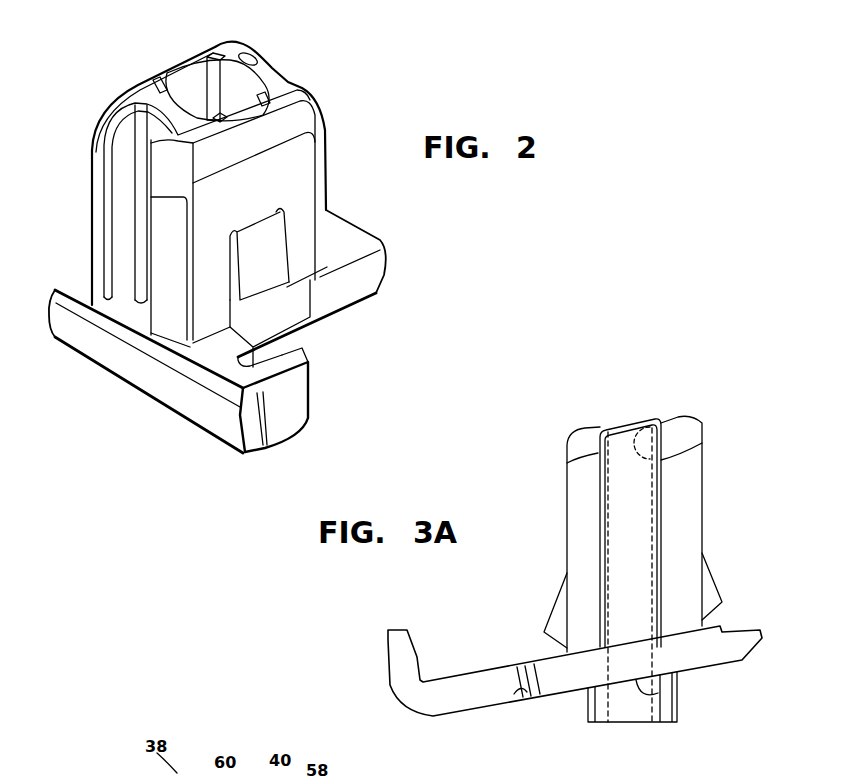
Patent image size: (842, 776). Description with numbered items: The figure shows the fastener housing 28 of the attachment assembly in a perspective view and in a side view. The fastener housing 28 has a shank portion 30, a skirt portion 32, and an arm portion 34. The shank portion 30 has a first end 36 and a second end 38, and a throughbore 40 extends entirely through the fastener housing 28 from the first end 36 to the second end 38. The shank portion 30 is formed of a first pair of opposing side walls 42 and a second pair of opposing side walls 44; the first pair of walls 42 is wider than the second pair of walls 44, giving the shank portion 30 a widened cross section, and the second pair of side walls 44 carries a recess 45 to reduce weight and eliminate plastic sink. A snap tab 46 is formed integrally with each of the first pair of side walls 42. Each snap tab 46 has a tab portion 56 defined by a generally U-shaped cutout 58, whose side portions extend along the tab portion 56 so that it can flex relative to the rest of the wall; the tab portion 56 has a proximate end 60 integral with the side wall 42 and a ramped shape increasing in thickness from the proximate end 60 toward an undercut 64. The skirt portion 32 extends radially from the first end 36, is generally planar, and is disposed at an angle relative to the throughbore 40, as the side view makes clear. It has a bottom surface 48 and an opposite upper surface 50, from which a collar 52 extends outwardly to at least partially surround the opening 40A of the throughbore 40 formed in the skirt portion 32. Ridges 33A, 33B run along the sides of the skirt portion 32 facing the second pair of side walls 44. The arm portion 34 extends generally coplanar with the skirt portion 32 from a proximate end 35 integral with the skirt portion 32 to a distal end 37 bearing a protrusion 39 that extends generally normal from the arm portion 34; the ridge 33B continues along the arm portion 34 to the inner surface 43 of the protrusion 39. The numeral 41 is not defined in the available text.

In FIG. 2, the fastener housing 28 is at (296, 53).
In FIG. 2, the shank portion 30 is at (303, 152).
In FIG. 3A, the shank portion 30 is at (688, 507).
In FIG. 2, the skirt portion 32 is at (375, 281).
In FIG. 3A, the skirt portion 32 is at (760, 635).
In FIG. 2, the ridge 33A is at (348, 250).
In FIG. 2, the ridge 33B is at (87, 323).
In FIG. 3A, the ridge 33B is at (490, 667).
In FIG. 2, the arm portion 34 is at (213, 423).
In FIG. 3A, the arm portion 34 is at (440, 688).
In FIG. 2, the proximate end 35 is at (180, 405).
In FIG. 3A, the proximate end 35 is at (513, 699).
In FIG. 2, the first end 36 is at (357, 274).
In FIG. 2, the distal end 37 is at (263, 452).
In FIG. 3A, the distal end 37 is at (432, 708).
In FIG. 2, the second end 38 is at (133, 88).
In FIG. 2, the protrusion 39 is at (305, 413).
In FIG. 3A, the protrusion 39 is at (392, 668).
In FIG. 2, the throughbore 40 is at (216, 86).
In FIG. 3A, the throughbore 40 is at (645, 428).
In FIG. 3A, the opening 40A is at (683, 694).
In FIG. 2, the clip tab 41 is at (292, 375).
In FIG. 3A, the clip tab 41 is at (394, 630).
In FIG. 2, the first pair of opposing side walls 42 is at (168, 66).
In FIG. 3A, the first pair of opposing side walls 42 is at (566, 492).
In FIG. 2, the inner surface 43 is at (295, 360).
In FIG. 3A, the inner surface 43 is at (422, 655).
In FIG. 2, the second pair of opposing side walls 44 is at (310, 88).
In FIG. 3A, the second pair of opposing side walls 44 is at (572, 432).
In FIG. 2, the recess 45 is at (268, 70).
In FIG. 2, the snap tab 46 is at (290, 256).
In FIG. 3A, the snap tab 46 is at (717, 577).
In FIG. 2, the bottom surface 48 is at (210, 370).
In FIG. 3A, the bottom surface 48 is at (528, 662).
In FIG. 2, the upper surface 50 is at (362, 306).
In FIG. 3A, the upper surface 50 is at (555, 705).
In FIG. 3A, the collar 52 is at (672, 707).
In FIG. 2, the tab portion 56 is at (352, 241).
In FIG. 3A, the tab portion 56 is at (558, 613).
In FIG. 2, the U-shaped cutout 58 is at (233, 240).
In FIG. 2, the proximate end 60 is at (255, 228).
In FIG. 3A, the proximate end 60 is at (703, 550).
In FIG. 2, the undercut 64 is at (297, 333).
In FIG. 3A, the undercut 64 is at (712, 610).